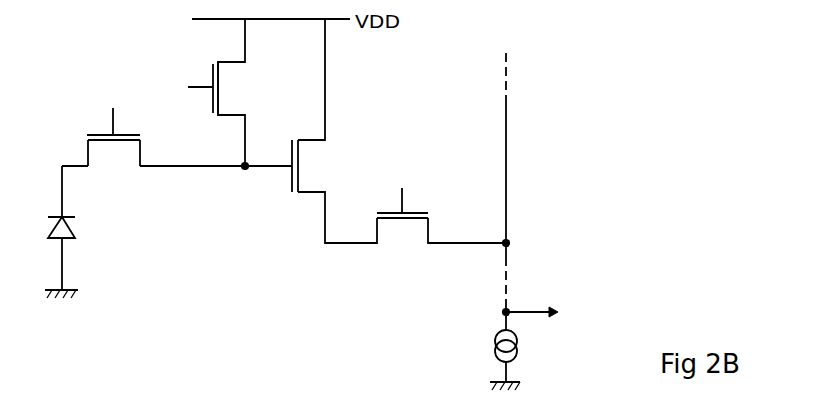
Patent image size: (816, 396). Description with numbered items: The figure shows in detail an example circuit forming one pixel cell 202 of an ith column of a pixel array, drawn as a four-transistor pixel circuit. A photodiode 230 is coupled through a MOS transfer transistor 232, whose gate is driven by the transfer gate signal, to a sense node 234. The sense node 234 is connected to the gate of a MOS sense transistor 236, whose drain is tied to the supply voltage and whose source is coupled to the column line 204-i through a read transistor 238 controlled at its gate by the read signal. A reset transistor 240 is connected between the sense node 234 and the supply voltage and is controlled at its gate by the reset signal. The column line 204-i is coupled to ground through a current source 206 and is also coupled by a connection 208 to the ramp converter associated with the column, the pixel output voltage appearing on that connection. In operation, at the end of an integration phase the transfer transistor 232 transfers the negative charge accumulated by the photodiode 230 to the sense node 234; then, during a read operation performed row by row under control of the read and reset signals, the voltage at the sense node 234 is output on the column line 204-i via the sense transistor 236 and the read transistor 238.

The pixel cell 202 is at (553, 79).
The column line 204-i is at (507, 212).
The current source 206 is at (516, 353).
The connection 208 is at (529, 309).
The photodiode 230 is at (73, 227).
The transfer transistor 232 is at (122, 160).
The sense node 234 is at (245, 170).
The sense transistor 236 is at (310, 167).
The read transistor 238 is at (402, 233).
The reset transistor 240 is at (228, 82).